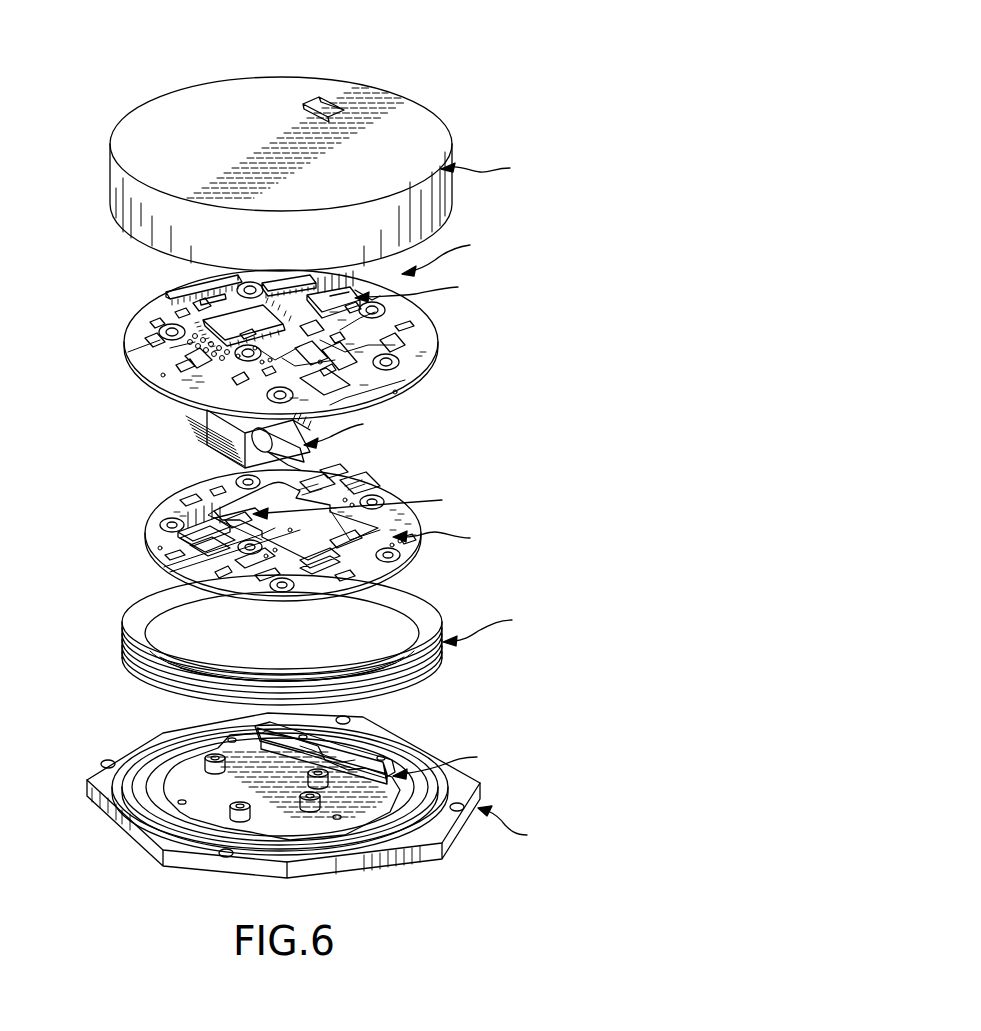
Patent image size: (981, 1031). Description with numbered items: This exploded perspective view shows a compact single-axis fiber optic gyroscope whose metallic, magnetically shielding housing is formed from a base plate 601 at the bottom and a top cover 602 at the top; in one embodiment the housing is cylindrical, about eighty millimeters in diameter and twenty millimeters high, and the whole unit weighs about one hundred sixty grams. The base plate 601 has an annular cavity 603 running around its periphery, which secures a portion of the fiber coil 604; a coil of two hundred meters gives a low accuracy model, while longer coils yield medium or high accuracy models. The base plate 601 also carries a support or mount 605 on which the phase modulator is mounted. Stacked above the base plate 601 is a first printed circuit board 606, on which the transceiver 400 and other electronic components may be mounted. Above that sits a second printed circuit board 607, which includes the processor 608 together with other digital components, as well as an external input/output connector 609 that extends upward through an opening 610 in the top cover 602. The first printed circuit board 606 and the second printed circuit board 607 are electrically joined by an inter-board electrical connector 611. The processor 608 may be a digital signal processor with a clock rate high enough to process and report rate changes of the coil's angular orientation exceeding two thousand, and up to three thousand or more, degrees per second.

The top cover 602 is at (109, 177).
The opening 610 is at (323, 103).
The second printed circuit board 607 is at (132, 370).
The processor 608 is at (222, 325).
The external input/output connector 609 is at (440, 322).
The transceiver (fiber management) 400 is at (207, 425).
The first printed circuit board 606 is at (152, 555).
The inter-board electrical connector 611 is at (188, 522).
The fiber coil 604 is at (137, 665).
The base plate 601 is at (122, 832).
The annular cavity 603 is at (122, 788).
The support or mount 605 is at (366, 776).